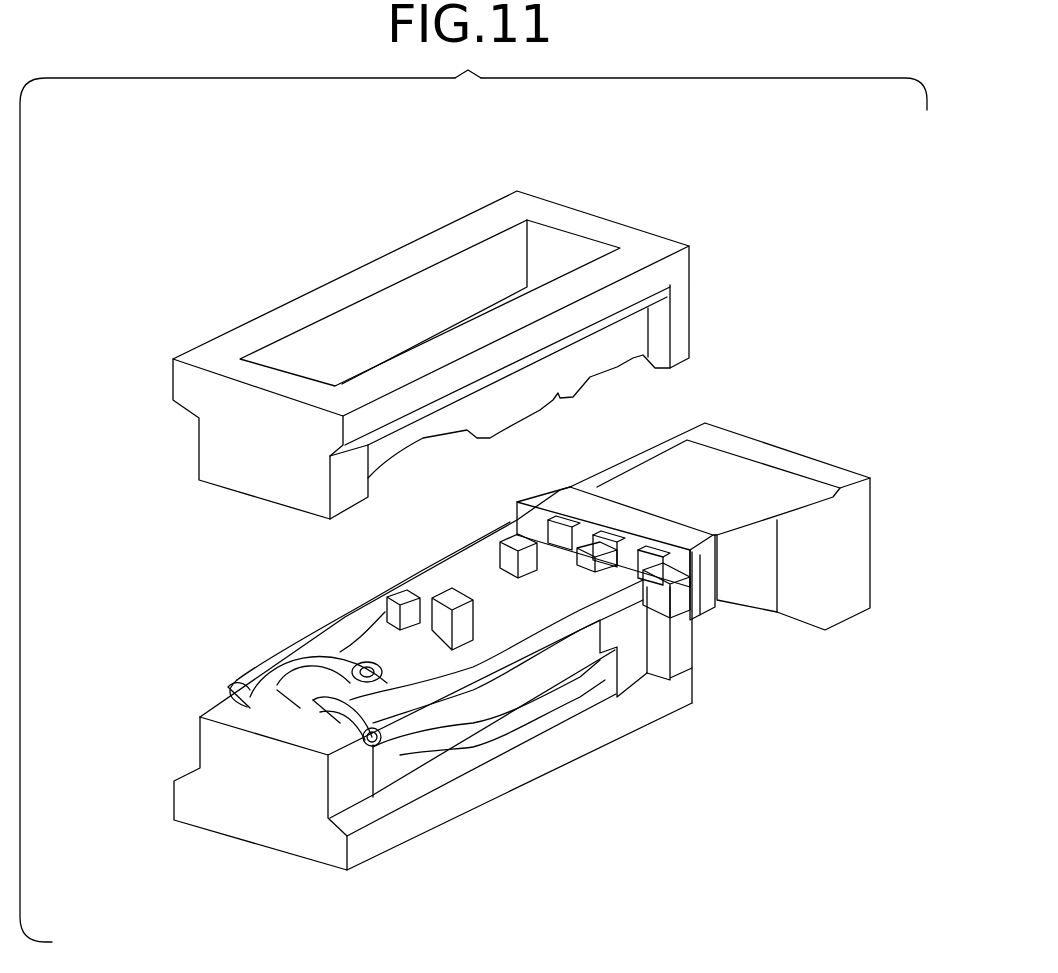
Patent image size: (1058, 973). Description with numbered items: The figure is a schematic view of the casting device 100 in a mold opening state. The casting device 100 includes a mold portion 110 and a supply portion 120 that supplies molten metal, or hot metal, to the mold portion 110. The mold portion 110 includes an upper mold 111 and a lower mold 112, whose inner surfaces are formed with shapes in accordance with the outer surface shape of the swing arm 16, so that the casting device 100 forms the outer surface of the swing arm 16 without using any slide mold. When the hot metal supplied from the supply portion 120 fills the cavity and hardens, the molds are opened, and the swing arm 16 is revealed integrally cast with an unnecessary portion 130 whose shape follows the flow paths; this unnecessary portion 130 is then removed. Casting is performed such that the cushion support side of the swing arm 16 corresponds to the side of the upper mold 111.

The casting device 100 is at (127, 207).
The mold portion 110 is at (142, 343).
The upper mold 111 is at (362, 277).
The lower mold 112 is at (258, 812).
The supply portion 120 is at (788, 450).
The unnecessary portion 130 is at (497, 603).
The swing arm 16 is at (343, 627).